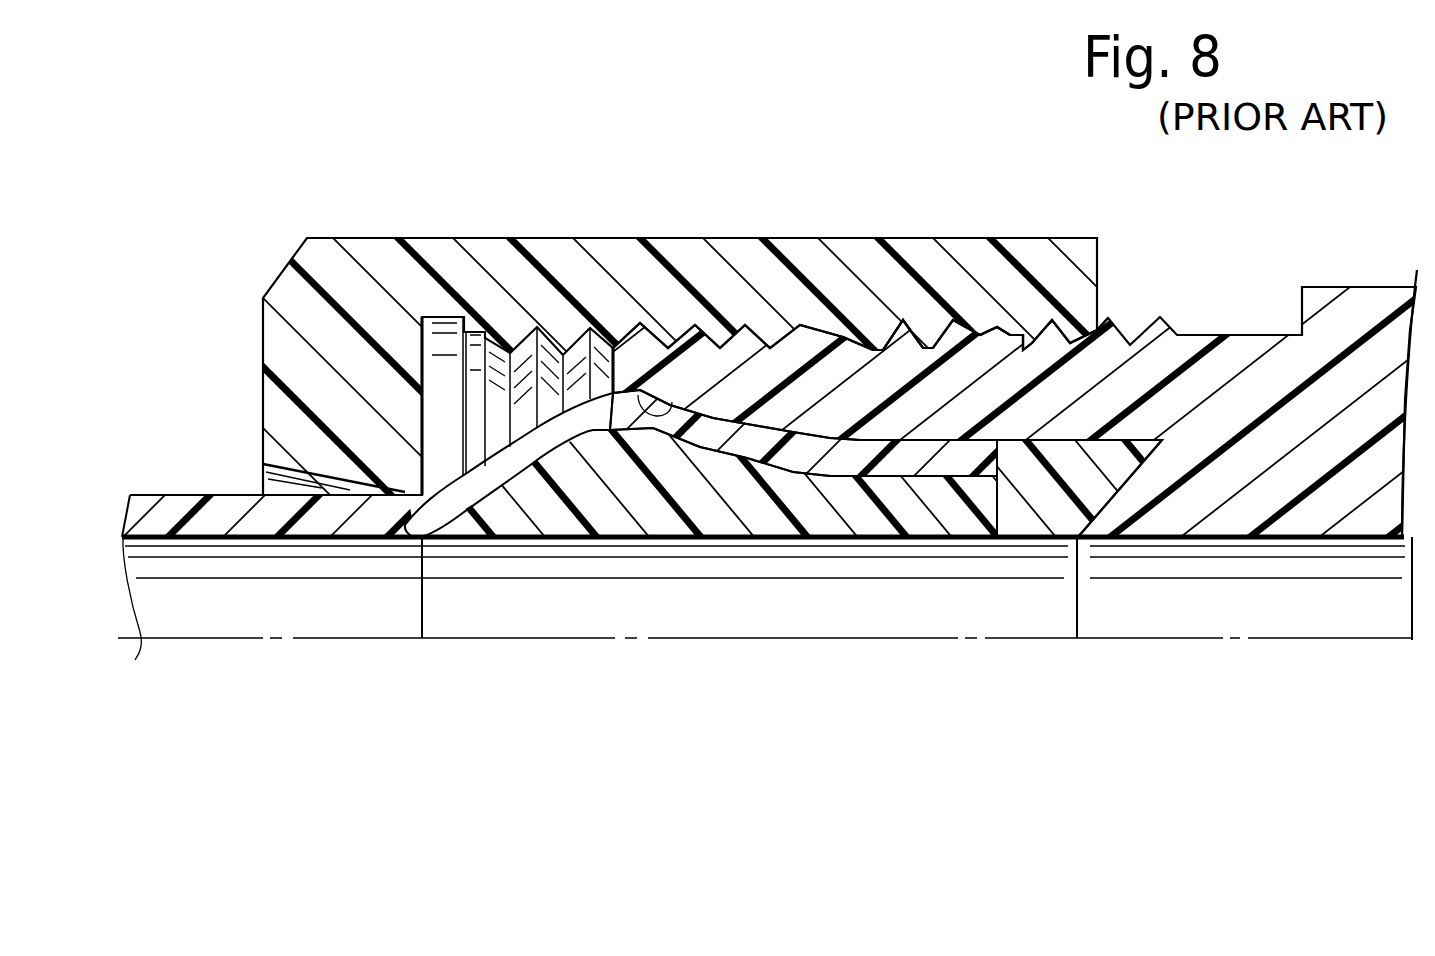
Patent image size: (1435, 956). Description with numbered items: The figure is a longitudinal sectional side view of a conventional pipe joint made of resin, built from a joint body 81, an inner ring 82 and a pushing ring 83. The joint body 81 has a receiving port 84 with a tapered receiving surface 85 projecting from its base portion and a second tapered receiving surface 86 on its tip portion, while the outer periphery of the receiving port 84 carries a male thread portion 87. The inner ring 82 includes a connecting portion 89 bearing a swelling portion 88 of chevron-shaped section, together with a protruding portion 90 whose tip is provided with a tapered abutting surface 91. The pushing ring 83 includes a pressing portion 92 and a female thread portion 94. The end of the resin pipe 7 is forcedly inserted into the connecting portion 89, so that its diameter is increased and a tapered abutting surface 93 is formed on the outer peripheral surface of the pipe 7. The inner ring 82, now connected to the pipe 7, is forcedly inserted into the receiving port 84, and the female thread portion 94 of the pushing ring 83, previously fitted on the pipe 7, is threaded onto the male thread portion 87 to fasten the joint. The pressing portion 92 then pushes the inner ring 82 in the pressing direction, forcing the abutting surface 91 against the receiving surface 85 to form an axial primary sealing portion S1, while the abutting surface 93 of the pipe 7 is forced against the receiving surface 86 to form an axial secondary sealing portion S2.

The pipe end 7 is at (167, 490).
The joint body 81 is at (1333, 283).
The inner ring 82 is at (418, 585).
The pushing ring 83 is at (353, 236).
The receiving port 84 is at (758, 373).
The tapered receiving surface 85 is at (1100, 506).
The tapered receiving surface 86 is at (632, 390).
The male thread portion 87 is at (878, 337).
The swelling portion 88 is at (600, 447).
The connecting portion 89 is at (878, 530).
The protruding portion 90 is at (1063, 453).
The tapered abutting surface 91 is at (1128, 483).
The pressing portion 92 is at (400, 467).
The tapered abutting surface 93 is at (723, 413).
The female thread portion 94 is at (1003, 333).
The axial primary sealing portion S1 is at (1160, 460).
The axial secondary sealing portion S2 is at (788, 421).